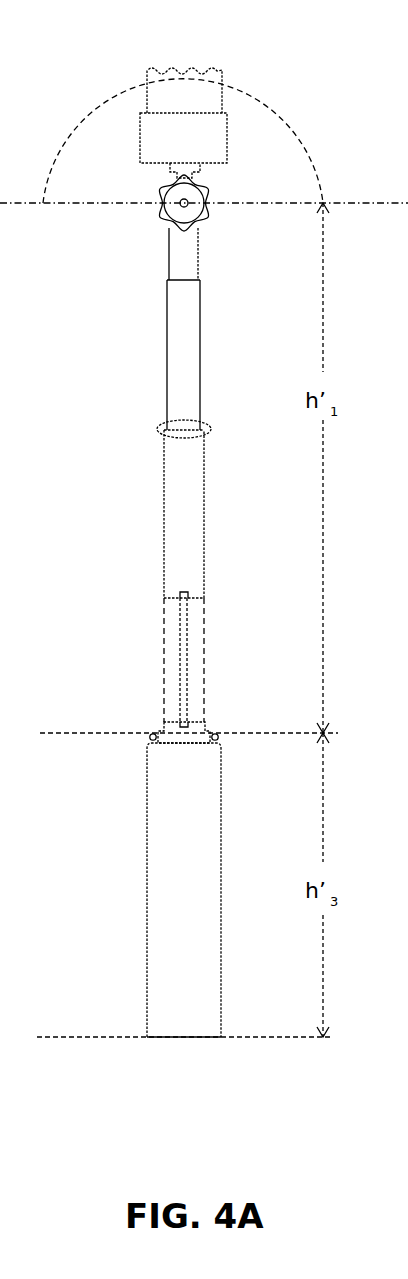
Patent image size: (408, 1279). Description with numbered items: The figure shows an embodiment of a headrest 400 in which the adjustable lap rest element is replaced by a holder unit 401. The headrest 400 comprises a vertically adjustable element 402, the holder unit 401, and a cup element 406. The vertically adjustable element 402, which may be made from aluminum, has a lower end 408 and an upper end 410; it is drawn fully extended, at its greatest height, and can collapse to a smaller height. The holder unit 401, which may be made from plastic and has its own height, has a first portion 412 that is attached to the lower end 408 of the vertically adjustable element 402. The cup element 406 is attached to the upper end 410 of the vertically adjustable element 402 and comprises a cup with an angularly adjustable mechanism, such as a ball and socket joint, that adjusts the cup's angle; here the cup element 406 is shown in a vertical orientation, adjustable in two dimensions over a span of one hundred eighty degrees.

The headrest 400 is at (303, 96).
The holder unit 401 is at (175, 900).
The vertically adjustable element 402 is at (128, 204).
The cup element 406 is at (128, 202).
The lower end 408 is at (236, 702).
The upper end 410 is at (230, 234).
The first portion 412 is at (232, 747).